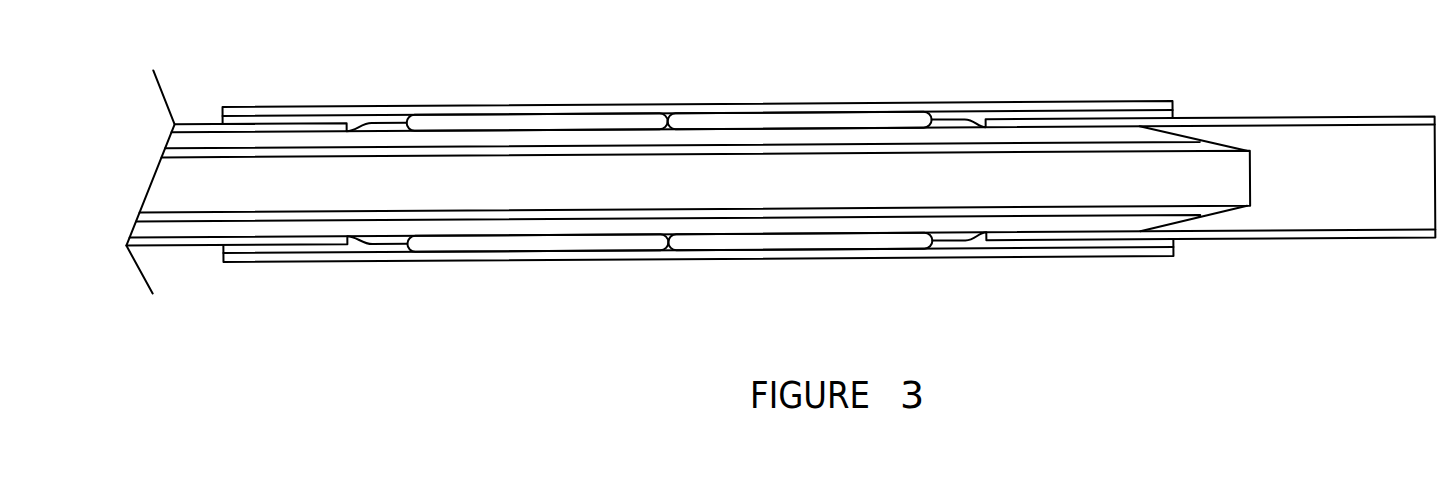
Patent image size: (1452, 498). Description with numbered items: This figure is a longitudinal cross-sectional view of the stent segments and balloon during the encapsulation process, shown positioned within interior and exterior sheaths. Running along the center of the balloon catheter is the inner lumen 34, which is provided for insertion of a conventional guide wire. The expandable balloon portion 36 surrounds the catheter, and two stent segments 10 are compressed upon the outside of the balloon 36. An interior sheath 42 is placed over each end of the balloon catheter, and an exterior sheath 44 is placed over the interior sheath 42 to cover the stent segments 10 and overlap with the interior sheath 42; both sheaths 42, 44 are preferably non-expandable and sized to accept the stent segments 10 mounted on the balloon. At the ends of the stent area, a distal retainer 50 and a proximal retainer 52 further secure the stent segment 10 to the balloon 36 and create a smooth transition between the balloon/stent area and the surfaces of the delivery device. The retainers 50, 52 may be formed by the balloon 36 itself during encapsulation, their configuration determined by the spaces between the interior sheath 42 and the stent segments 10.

The stent segment 10 is at (892, 122).
The inner lumen 34 is at (712, 182).
The expandable balloon portion 36 is at (197, 139).
The interior sheath 42 is at (1350, 124).
The exterior sheath 44 is at (1128, 107).
The distal retainer 50 is at (962, 245).
The proximal retainer 52 is at (377, 246).